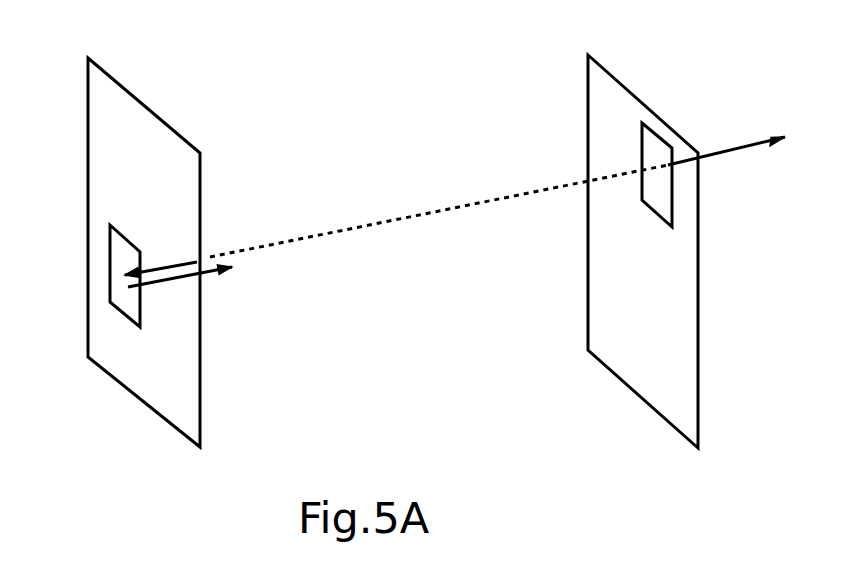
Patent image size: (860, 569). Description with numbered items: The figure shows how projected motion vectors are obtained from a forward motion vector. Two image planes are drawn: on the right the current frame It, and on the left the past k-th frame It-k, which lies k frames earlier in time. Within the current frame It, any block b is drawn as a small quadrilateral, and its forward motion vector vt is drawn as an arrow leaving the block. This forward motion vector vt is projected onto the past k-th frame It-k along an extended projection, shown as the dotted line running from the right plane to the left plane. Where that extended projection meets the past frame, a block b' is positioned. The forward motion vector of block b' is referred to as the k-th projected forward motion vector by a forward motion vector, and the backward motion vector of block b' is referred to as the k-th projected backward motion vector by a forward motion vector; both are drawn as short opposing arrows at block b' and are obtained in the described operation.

The past k-th frame It-k is at (122, 224).
The current frame It is at (641, 224).
The block b is at (671, 127).
The block positioned on extended projection b' is at (92, 322).
The forward motion vector vt is at (726, 129).